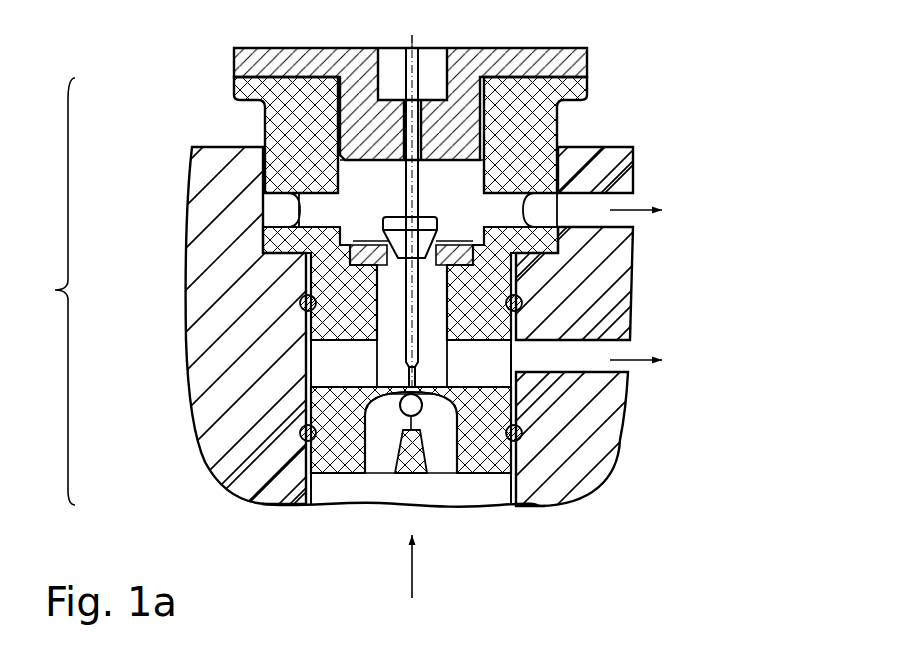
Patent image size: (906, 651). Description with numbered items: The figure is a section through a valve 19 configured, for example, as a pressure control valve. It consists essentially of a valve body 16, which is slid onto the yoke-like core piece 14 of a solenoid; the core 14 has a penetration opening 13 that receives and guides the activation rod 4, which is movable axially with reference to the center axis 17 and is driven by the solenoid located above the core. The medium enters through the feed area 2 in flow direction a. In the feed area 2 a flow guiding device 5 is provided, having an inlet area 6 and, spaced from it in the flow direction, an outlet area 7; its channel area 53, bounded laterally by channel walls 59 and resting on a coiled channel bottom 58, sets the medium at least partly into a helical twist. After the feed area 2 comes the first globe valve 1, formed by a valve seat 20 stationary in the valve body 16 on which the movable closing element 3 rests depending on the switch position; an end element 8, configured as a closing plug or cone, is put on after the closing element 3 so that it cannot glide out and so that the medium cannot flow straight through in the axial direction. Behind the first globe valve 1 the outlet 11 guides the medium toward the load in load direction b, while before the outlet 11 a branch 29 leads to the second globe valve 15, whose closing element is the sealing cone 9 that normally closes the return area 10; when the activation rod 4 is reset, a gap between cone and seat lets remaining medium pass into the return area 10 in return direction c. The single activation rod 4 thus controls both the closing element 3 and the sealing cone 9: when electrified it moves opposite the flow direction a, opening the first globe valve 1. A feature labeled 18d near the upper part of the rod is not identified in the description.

The globe valve 1 is at (388, 407).
The feed area 2 is at (382, 489).
The closing element 3 is at (480, 452).
The activation rod 4 is at (345, 280).
The flow guiding device 5 is at (356, 440).
The inlet area 6 is at (443, 460).
The outlet area 7 is at (520, 352).
The end element 8 is at (516, 482).
The sealing cone 9 is at (376, 227).
The return area 10 is at (463, 177).
The outlet 11 is at (335, 365).
The penetration opening 13 is at (400, 90).
The core piece 14 is at (505, 48).
The second globe valve 15 is at (268, 187).
The valve body 16 is at (40, 291).
The center axis 17 is at (402, 133).
The needle end 18d is at (365, 24).
The valve 19 is at (623, 130).
The valve seat 20 is at (433, 383).
The branch 29 is at (537, 256).
The channel area 53 is at (377, 460).
The channel bottom 58 is at (438, 412).
The channel walls 59 is at (298, 537).
The flow direction a is at (410, 583).
The load direction b is at (655, 361).
The return direction c is at (654, 211).